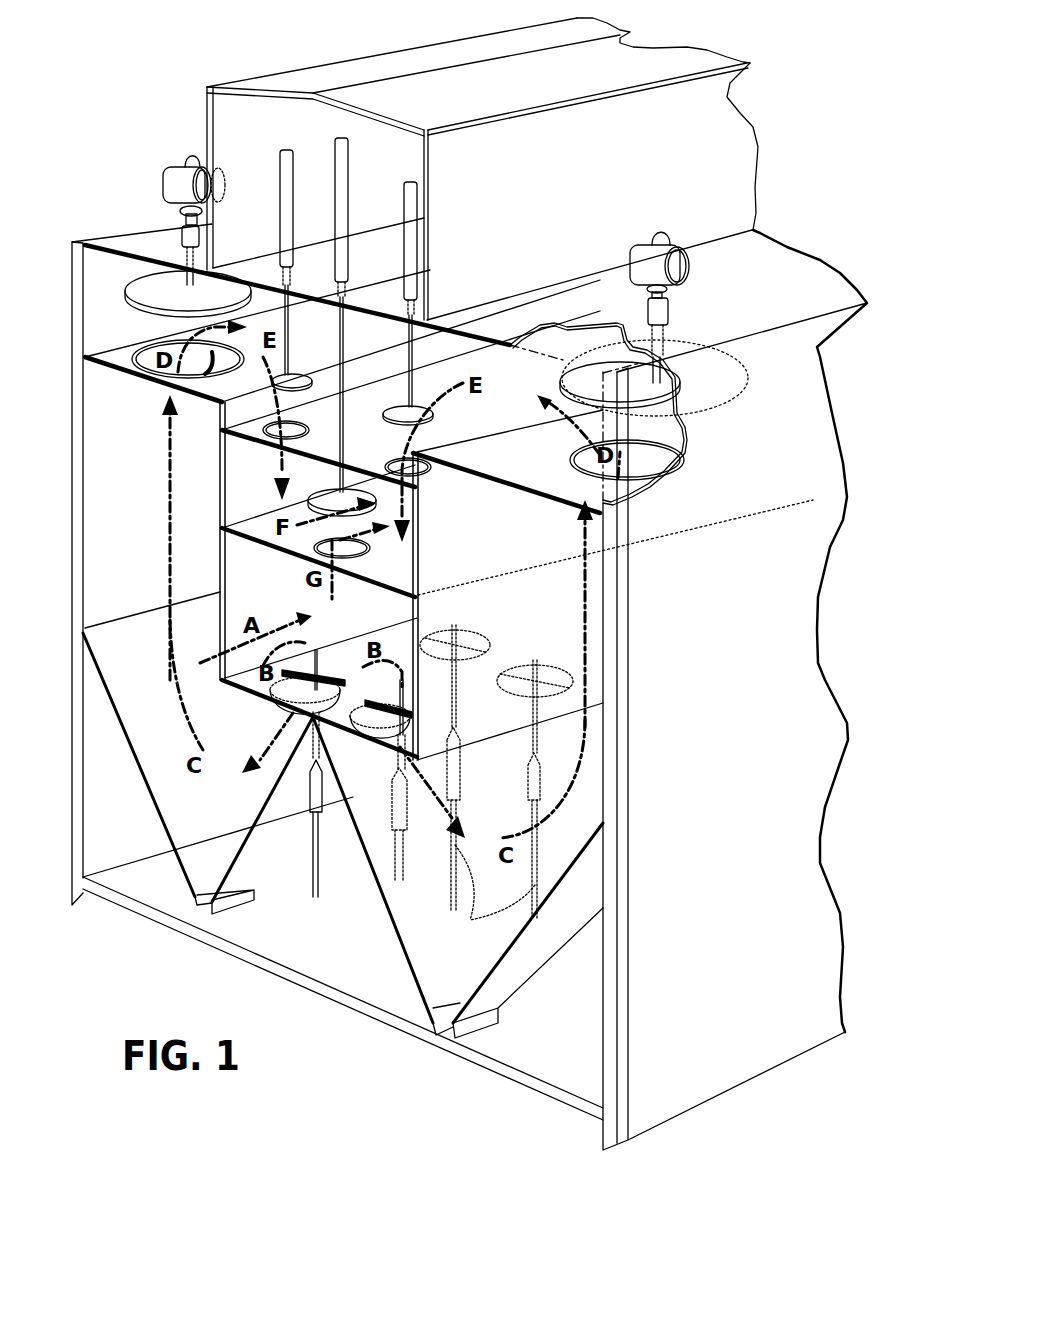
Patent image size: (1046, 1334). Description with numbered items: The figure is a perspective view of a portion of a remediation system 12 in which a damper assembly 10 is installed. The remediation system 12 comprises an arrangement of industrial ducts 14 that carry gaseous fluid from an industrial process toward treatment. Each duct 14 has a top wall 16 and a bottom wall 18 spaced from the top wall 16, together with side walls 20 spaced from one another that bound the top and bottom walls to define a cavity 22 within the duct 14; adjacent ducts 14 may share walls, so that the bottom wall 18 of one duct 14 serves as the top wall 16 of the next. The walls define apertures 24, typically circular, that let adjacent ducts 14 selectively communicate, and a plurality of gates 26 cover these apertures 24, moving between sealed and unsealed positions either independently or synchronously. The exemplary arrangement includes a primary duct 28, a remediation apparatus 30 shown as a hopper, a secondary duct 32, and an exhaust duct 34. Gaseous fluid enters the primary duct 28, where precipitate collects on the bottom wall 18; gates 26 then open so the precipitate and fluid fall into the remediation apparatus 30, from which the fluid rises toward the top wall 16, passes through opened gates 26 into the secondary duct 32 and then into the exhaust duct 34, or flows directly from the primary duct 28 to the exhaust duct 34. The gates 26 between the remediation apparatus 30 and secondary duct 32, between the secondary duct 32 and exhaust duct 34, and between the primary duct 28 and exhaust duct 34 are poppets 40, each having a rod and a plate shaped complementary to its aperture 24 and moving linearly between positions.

The damper assembly 10 is at (316, 688).
The remediation system 12 is at (128, 84).
The industrial duct 14 is at (645, 748).
The top wall 16 is at (112, 372).
The bottom wall 18 is at (112, 353).
The side wall 20 is at (100, 263).
The cavity 22 is at (125, 548).
The aperture 24 is at (232, 354).
The gate 26 is at (175, 172).
The primary duct 28 is at (374, 619).
The remediation apparatus 30 is at (212, 838).
The secondary duct 32 is at (440, 375).
The exhaust duct 34 is at (378, 567).
The poppet 40 is at (153, 286).